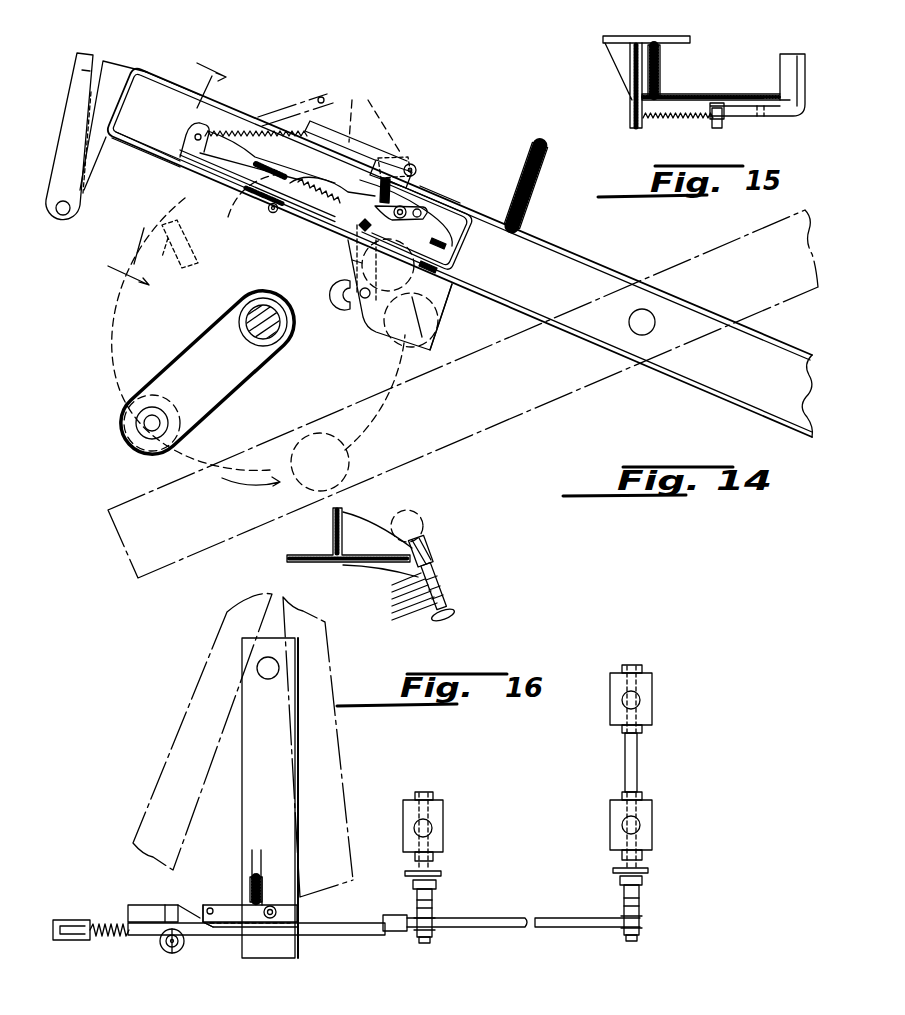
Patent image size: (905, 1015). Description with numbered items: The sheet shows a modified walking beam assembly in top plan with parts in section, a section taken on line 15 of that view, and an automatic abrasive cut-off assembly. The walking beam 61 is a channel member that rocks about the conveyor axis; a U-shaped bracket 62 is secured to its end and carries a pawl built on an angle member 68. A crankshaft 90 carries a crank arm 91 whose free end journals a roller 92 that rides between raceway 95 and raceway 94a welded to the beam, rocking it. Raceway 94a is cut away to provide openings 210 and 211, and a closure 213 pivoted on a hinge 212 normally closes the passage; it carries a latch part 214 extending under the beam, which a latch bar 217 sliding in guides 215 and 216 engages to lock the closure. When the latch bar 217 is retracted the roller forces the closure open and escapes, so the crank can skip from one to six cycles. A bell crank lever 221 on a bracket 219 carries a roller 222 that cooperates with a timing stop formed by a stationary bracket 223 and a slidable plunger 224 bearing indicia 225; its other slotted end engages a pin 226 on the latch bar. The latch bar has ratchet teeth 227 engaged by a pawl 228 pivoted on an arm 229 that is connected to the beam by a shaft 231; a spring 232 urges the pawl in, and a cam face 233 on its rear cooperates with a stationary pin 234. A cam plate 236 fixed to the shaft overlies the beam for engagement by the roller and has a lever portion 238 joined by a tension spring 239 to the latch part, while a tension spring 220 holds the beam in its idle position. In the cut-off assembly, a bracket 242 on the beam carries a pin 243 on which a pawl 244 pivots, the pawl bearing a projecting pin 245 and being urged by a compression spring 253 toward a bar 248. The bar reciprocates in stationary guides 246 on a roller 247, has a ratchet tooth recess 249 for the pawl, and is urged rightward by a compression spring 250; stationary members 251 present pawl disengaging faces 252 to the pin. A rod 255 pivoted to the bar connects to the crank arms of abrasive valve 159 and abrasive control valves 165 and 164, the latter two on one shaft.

In FIG. 14, the section line 15— 15 is at (157, 170).
In FIG. 14, the walking beam 61 is at (698, 388).
In FIG. 15, the walking beam 61 is at (718, 93).
In FIG. 16, the walking beam 61 is at (284, 812).
In FIG. 14, the bracket 62 is at (91, 170).
In FIG. 14, the angle member 68 is at (70, 98).
In FIG. 14, the crankshaft 90 is at (273, 330).
In FIG. 14, the crank arm 91 is at (207, 343).
In FIG. 14, the roller 92 is at (130, 422).
In FIG. 14, the raceway 94a is at (142, 152).
In FIG. 14, the raceway 95 is at (163, 85).
In FIG. 15, the raceway 95 is at (662, 62).
In FIG. 16, the abrasive valve 159 is at (438, 813).
In FIG. 16, the abrasive control valve 164 is at (645, 713).
In FIG. 16, the abrasive control valve 165 is at (646, 832).
In FIG. 14, the opening 210 is at (184, 165).
In FIG. 14, the opening 211 is at (443, 313).
In FIG. 14, the hinge 212 is at (275, 215).
In FIG. 14, the closure 213 is at (247, 194).
In FIG. 14, the latch part 214 is at (192, 141).
In FIG. 15, the latch part 214 is at (778, 120).
In FIG. 14, the guide 215 is at (463, 245).
In FIG. 14, the guide 216 is at (272, 165).
In FIG. 14, the latch bar 217 is at (226, 190).
In FIG. 14, the bracket 219 is at (400, 303).
In FIG. 14, the tension spring 220 is at (534, 195).
In FIG. 14, the bell crank lever 221 is at (355, 267).
In FIG. 14, the roller 222 is at (334, 311).
In FIG. 16, the roller 222 is at (418, 514).
In FIG. 16, the bracket 223 is at (427, 562).
In FIG. 16, the slidable plunger 224 is at (453, 617).
In FIG. 16, the indicia 225 is at (433, 596).
In FIG. 14, the pin 226 is at (364, 232).
In FIG. 14, the ratchet teeth 227 is at (332, 177).
In FIG. 14, the pawl 228 is at (372, 232).
In FIG. 14, the arm 229 is at (432, 188).
In FIG. 14, the shaft 231 is at (417, 171).
In FIG. 14, the spring 232 is at (387, 160).
In FIG. 14, the cam face 233 is at (408, 216).
In FIG. 14, the stationary pin 234 is at (422, 214).
In FIG. 14, the cam plate 236 is at (399, 212).
In FIG. 15, the cam plate 236 is at (689, 36).
In FIG. 14, the lever portion 238 is at (348, 143).
In FIG. 15, the lever portion 238 is at (603, 39).
In FIG. 14, the tension spring 239 is at (284, 114).
In FIG. 15, the tension spring 239 is at (680, 126).
In FIG. 16, the bracket 242 is at (295, 873).
In FIG. 16, the pin 243 is at (275, 898).
In FIG. 16, the pawl 244 is at (232, 907).
In FIG. 16, the pin 245 is at (208, 910).
In FIG. 16, the stationary guides 246 is at (163, 948).
In FIG. 16, the roller 247 is at (172, 952).
In FIG. 16, the bar 248 is at (267, 945).
In FIG. 16, the ratchet tooth recess 249 is at (207, 925).
In FIG. 16, the compression spring 250 is at (100, 938).
In FIG. 16, the members 251 is at (147, 906).
In FIG. 16, the pawl disengaging faces 252 is at (188, 917).
In FIG. 16, the compression spring 253 is at (252, 877).
In FIG. 16, the rod 255 is at (542, 918).